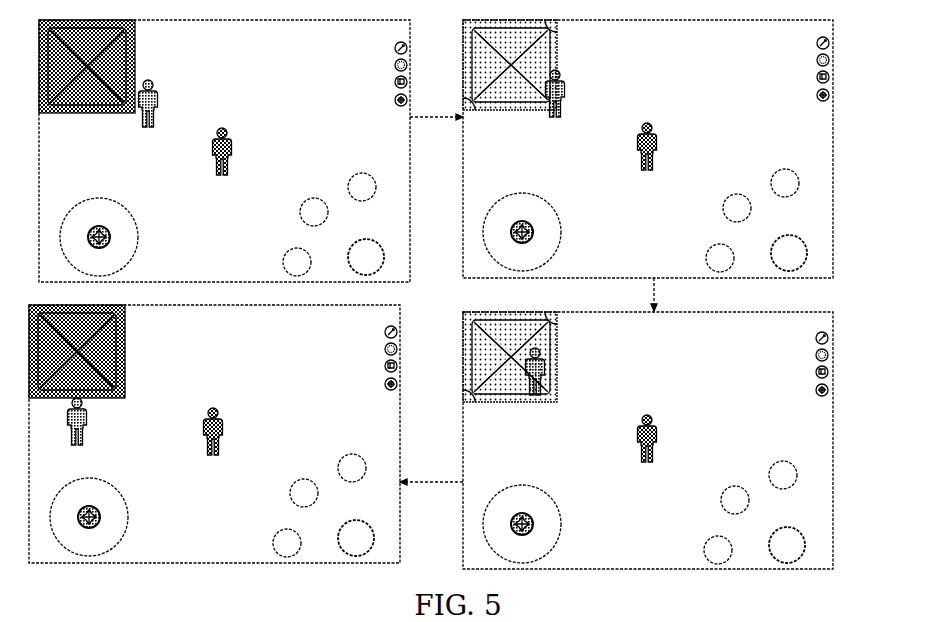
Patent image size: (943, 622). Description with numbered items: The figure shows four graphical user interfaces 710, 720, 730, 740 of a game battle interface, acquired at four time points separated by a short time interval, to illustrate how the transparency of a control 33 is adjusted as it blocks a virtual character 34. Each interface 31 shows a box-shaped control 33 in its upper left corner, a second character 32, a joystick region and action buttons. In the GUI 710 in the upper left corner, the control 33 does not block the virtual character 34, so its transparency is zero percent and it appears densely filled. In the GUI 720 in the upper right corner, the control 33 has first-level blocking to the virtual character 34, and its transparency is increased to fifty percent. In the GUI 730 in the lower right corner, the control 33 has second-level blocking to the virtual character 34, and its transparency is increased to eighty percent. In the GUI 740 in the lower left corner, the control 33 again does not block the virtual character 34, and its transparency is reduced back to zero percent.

The game screen 31 is at (228, 38).
The player character 32 is at (232, 150).
The control 33 is at (135, 73).
The virtual character 34 is at (158, 103).
The GUI 710 is at (410, 165).
The GUI 720 is at (833, 160).
The GUI 730 is at (833, 455).
The GUI 740 is at (400, 447).